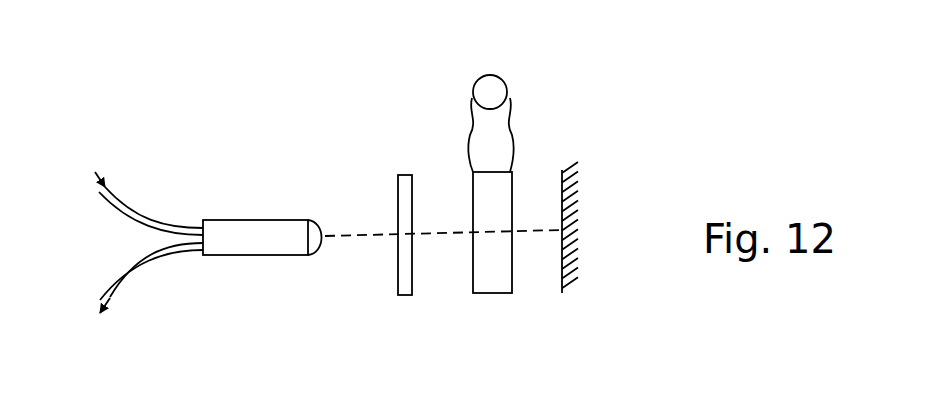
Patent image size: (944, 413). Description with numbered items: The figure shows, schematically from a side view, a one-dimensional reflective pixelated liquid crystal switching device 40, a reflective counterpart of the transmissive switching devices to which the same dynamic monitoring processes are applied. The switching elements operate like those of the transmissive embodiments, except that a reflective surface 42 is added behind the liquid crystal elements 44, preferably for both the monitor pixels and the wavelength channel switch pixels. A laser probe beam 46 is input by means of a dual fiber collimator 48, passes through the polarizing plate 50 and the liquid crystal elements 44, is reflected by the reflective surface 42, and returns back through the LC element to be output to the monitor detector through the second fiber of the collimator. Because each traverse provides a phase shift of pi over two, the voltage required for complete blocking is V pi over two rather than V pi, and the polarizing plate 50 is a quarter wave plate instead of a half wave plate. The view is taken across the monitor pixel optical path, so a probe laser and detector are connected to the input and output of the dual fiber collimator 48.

The one-dimensional reflective pixelated liquid crystal switching device 40 is at (423, 102).
The reflective surface 42 is at (567, 293).
The liquid crystal elements 44 is at (493, 293).
The laser probe beam 46 is at (365, 235).
The dual fiber collimator 48 is at (267, 257).
The polarizing plate 50 is at (408, 295).